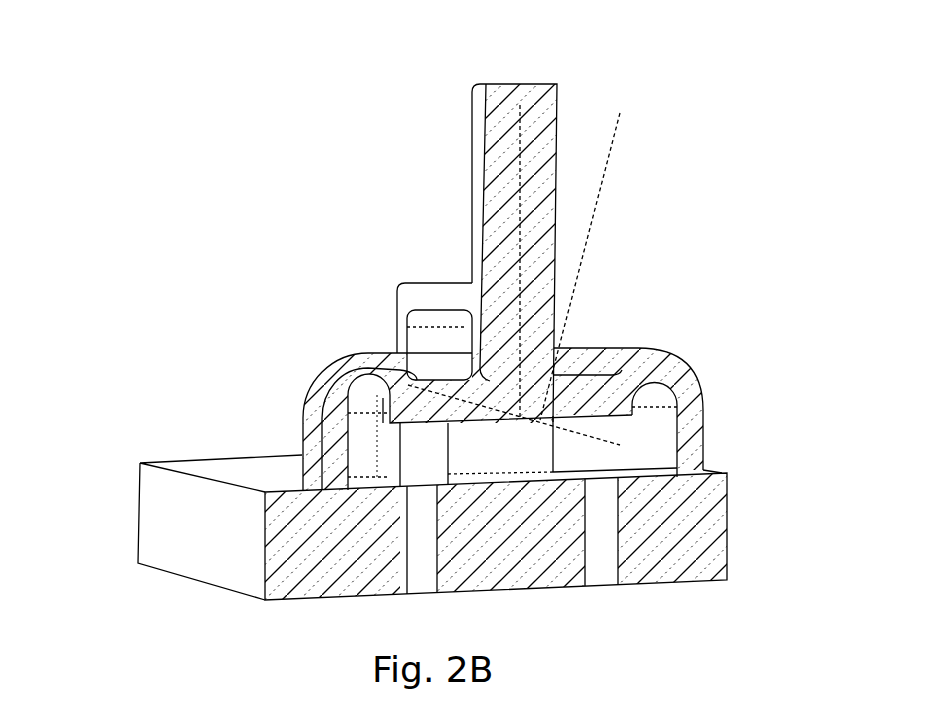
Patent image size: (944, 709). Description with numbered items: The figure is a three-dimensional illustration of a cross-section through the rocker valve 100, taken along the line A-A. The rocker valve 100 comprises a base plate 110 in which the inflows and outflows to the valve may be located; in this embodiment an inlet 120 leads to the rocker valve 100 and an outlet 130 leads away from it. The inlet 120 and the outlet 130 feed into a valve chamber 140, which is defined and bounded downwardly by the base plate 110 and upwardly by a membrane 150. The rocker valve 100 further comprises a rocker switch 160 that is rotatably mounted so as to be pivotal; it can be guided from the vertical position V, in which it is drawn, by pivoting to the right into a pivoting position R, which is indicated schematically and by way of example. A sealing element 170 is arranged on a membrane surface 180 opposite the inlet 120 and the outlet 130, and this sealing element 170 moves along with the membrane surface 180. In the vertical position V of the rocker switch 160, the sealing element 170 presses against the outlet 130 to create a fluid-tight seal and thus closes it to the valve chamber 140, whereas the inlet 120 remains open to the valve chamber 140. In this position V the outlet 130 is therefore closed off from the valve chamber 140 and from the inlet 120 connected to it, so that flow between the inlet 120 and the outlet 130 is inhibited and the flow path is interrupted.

The rocker valve 100 is at (310, 207).
The base plate 110 is at (707, 473).
The inlet 120 is at (598, 570).
The outlet 130 is at (415, 568).
The valve chamber 140 is at (658, 423).
The membrane 150 is at (655, 350).
The rocker switch 160 is at (497, 200).
The sealing element 170 is at (407, 462).
The membrane surface 180 is at (447, 428).
The vertical position V is at (523, 158).
The pivoting position R is at (610, 157).
The section line A- A is at (131, 531).